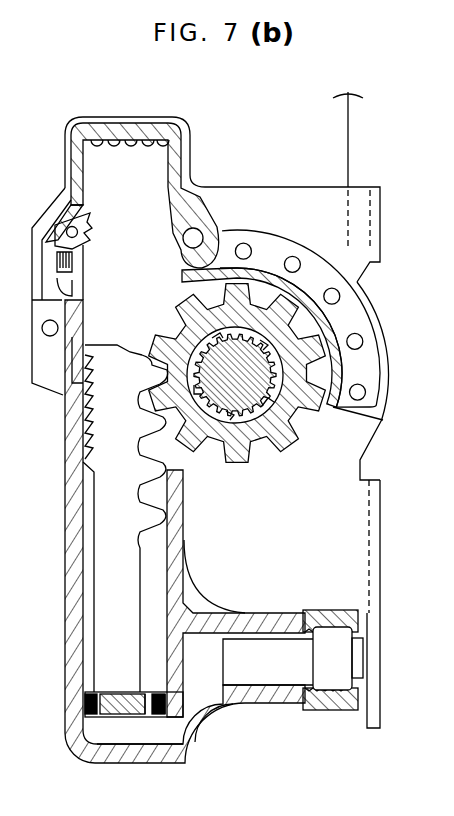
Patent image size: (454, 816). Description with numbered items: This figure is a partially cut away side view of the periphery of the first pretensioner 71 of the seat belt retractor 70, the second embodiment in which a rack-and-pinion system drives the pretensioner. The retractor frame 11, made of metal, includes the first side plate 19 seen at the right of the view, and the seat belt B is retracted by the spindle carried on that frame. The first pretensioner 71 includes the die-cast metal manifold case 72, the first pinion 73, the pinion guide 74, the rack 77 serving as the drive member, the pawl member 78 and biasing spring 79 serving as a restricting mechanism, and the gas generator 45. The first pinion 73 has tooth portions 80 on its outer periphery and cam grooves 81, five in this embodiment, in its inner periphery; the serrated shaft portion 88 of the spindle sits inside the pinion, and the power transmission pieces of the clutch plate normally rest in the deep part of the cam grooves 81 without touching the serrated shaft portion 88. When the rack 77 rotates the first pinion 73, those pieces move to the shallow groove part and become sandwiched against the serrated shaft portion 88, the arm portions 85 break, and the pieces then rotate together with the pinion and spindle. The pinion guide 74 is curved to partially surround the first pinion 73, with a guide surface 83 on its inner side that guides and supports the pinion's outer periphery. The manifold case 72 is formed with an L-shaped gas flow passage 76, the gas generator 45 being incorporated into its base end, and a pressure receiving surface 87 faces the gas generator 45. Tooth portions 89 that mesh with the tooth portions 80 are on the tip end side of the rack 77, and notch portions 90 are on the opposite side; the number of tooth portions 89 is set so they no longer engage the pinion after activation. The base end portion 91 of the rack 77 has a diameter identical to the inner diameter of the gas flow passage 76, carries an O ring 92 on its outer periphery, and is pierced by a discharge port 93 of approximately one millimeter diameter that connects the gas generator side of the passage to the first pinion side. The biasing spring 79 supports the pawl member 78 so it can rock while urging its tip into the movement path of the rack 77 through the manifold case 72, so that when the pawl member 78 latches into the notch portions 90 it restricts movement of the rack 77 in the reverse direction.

The seat belt retractor 70 is at (413, 99).
The seat belt B is at (345, 113).
The pawl member 78 is at (75, 205).
The biasing spring 79 is at (72, 278).
The rack 77 is at (90, 622).
The manifold case 72 is at (198, 768).
The gas flow passage 76 is at (158, 735).
The pressure receiving surface 87 is at (205, 700).
The tooth portions 89 is at (183, 498).
The notch portions 90 is at (83, 408).
The serrated shaft portion 88 is at (230, 432).
The O ring 92 is at (86, 702).
The discharge port 93 is at (150, 693).
The base end portion 91 is at (110, 715).
The pinion guide 74 is at (386, 370).
The first pretensioner 71 is at (262, 262).
The guide surface 83 is at (307, 310).
The arm portions 85 is at (346, 410).
The tooth portions 80 is at (297, 438).
The first pinion 73 is at (289, 428).
The cam grooves 81 is at (259, 443).
The retractor frame 11 is at (383, 678).
The first side plate 19 is at (348, 542).
The gas generator 45 is at (268, 687).